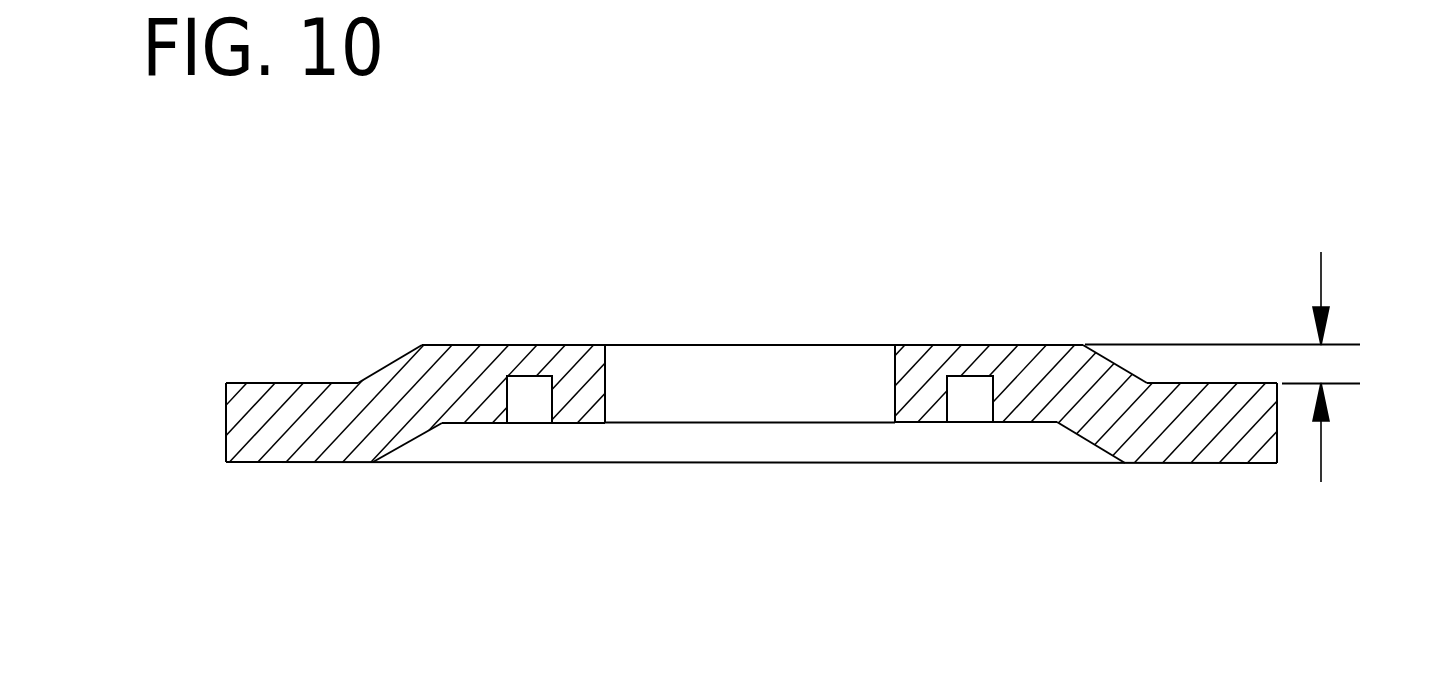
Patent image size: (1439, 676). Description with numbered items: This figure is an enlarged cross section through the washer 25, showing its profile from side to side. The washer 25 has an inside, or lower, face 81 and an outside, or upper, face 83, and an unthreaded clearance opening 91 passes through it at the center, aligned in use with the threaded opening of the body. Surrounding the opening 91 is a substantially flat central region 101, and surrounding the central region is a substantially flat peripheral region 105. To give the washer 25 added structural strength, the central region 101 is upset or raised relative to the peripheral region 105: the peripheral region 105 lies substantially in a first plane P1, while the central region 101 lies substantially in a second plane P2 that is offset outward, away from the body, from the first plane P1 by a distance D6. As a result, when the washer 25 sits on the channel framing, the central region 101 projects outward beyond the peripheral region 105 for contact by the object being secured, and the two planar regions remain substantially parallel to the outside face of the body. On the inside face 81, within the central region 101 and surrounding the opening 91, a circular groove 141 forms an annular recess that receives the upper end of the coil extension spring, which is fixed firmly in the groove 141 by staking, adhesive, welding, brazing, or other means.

The washer 25 is at (200, 473).
The inside face 81 is at (1173, 464).
The outside face 83 is at (450, 345).
The unthreaded opening 91 is at (610, 380).
The central region 101 is at (937, 345).
The peripheral region 105 is at (292, 383).
The circular groove 141 is at (532, 403).
The distance D6 is at (1321, 339).
The first plane P1 is at (1351, 386).
The second plane P2 is at (1252, 349).